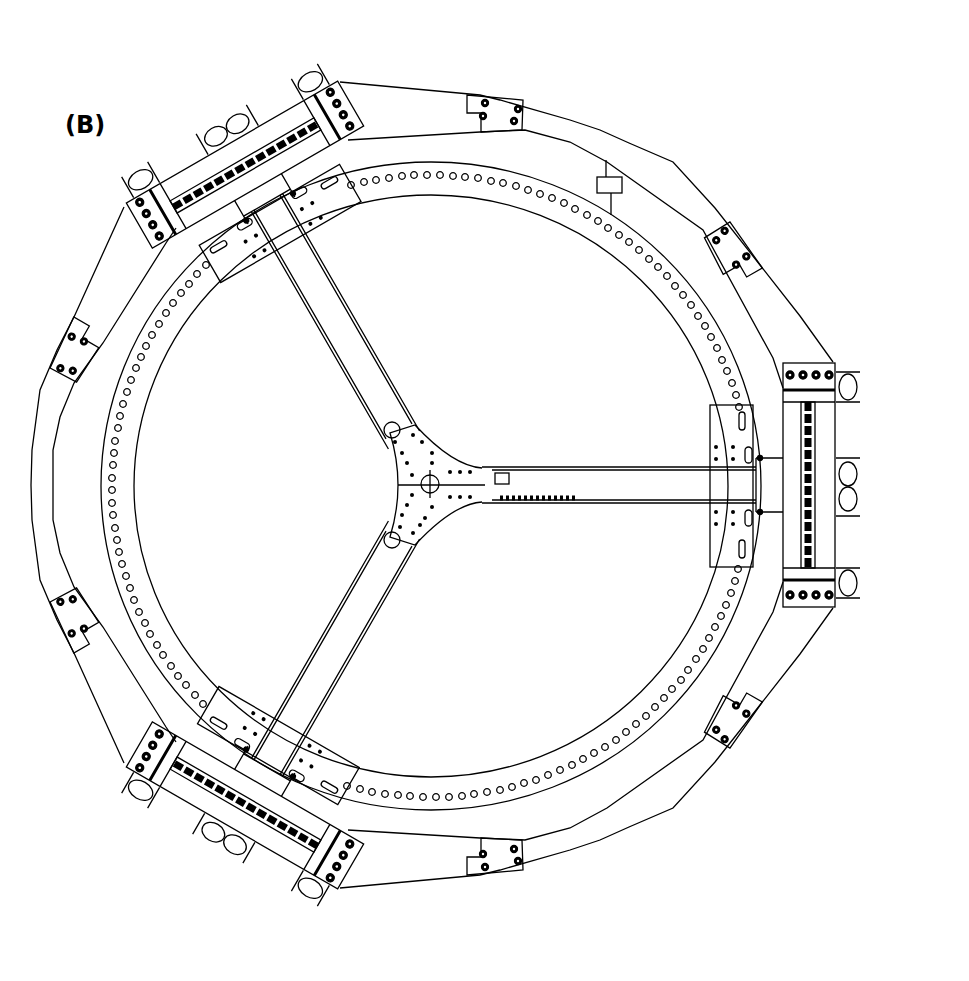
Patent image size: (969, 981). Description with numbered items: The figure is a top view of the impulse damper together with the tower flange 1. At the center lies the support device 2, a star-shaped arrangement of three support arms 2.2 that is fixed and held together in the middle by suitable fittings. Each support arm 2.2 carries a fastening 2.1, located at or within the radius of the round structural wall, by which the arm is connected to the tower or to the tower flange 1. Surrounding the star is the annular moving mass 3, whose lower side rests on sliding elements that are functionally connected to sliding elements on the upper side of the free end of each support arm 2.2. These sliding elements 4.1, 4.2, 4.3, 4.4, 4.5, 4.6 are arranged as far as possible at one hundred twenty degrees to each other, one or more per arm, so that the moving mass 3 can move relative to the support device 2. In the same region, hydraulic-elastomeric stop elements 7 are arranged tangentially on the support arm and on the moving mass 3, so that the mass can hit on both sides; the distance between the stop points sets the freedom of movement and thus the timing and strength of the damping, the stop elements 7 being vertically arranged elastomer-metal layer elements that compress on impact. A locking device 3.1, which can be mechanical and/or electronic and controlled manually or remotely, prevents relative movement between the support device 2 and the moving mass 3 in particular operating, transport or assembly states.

The tower flange 1 is at (431, 486).
The support device 2 is at (430, 490).
The fastening 2.1 is at (242, 270).
The support arm 2.2 is at (560, 466).
The annular moving mass 3 is at (663, 183).
The locking device 3.1 is at (602, 178).
The sliding element 4.1 is at (329, 140).
The sliding element 4.2 is at (329, 140).
The sliding element 4.3 is at (329, 140).
The sliding element 4.4 is at (329, 140).
The sliding element 4.5 is at (329, 140).
The sliding element 4.6 is at (250, 163).
The hydraulic-elastomeric stop element 7 is at (795, 535).